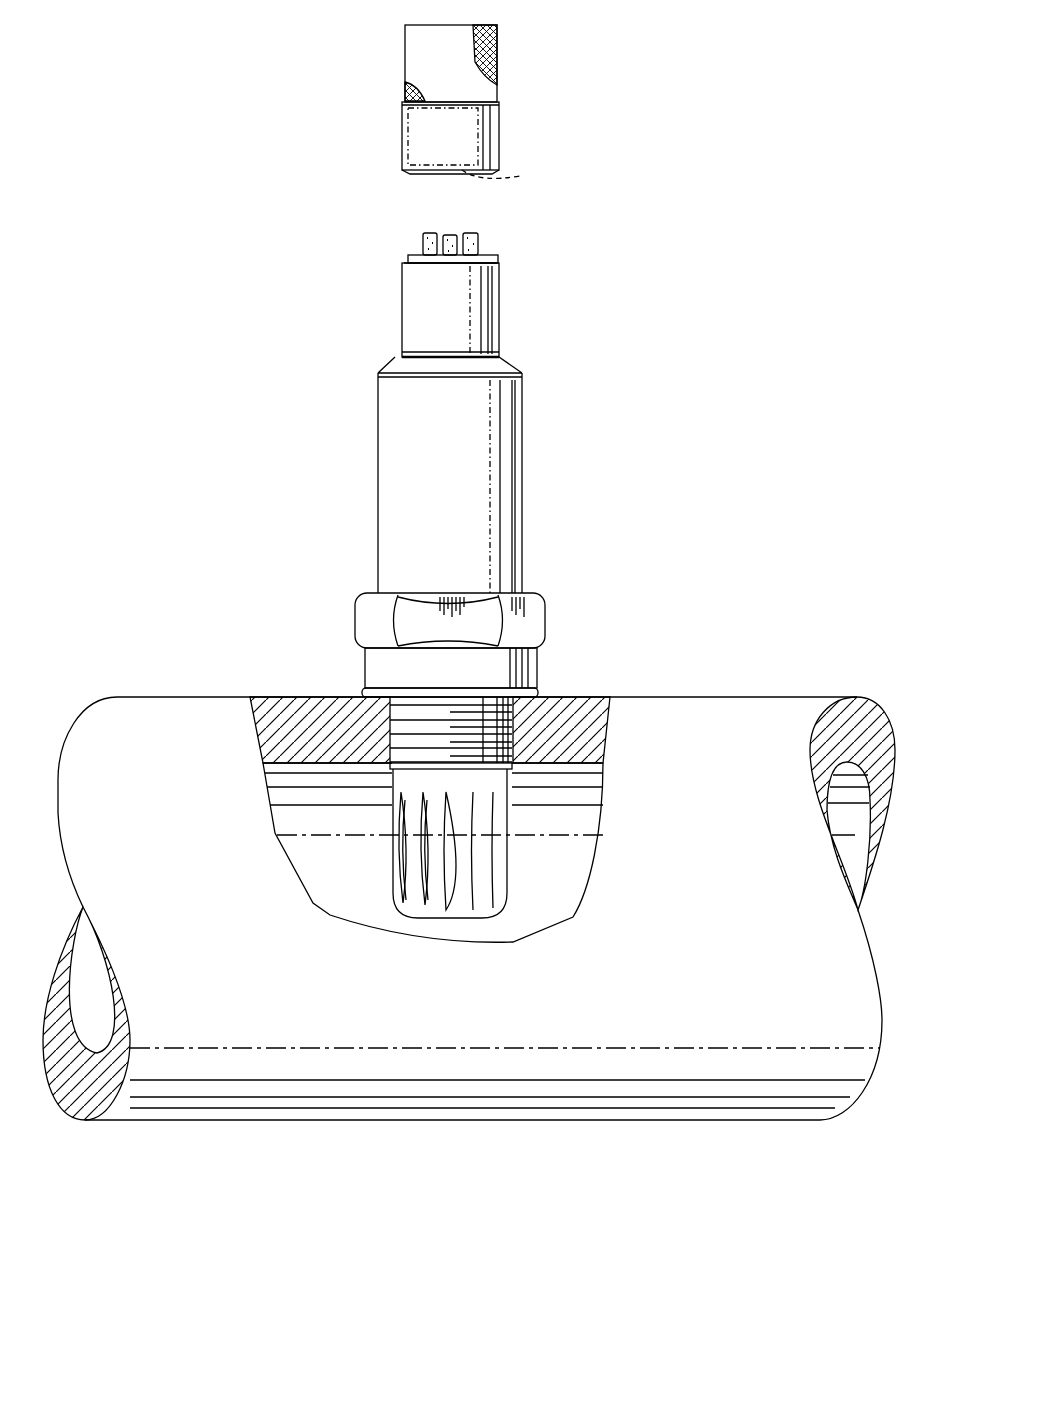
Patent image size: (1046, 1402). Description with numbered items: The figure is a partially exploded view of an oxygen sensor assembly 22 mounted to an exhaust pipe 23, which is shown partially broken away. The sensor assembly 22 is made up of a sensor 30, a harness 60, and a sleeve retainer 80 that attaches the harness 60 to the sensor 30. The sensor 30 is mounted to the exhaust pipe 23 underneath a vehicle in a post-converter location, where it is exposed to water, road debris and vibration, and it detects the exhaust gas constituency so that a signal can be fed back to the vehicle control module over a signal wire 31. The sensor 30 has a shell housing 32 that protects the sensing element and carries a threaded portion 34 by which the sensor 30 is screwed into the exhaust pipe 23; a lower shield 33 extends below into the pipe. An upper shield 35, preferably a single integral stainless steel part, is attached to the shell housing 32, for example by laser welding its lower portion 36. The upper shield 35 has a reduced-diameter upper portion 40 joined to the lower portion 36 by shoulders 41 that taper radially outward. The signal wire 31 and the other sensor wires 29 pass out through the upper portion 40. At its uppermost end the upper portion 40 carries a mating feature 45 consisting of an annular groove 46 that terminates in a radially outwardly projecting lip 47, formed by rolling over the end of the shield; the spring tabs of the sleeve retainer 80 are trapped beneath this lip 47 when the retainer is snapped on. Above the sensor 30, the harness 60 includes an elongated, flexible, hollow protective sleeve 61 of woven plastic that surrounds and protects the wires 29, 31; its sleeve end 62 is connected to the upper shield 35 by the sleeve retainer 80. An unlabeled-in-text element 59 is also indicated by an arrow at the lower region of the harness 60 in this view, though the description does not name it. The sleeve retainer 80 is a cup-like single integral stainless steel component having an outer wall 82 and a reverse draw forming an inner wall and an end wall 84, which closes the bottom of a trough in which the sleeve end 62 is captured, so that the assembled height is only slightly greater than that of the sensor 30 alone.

The oxygen sensor assembly 22 is at (215, 218).
The exhaust pipe 23 is at (177, 710).
The sensor wires 29 is at (424, 245).
The sensor 30 is at (525, 477).
The signal wire 31 is at (455, 233).
The shell housing 32 is at (502, 663).
The lower shield 33 is at (488, 858).
The threaded portion 34 is at (395, 723).
The upper shield 35 is at (522, 421).
The lower portion 36 is at (386, 500).
The upper portion 40 is at (488, 305).
The shoulders 41 is at (394, 360).
The mating feature 45 is at (501, 258).
The annular groove 46 is at (404, 266).
The outwardly projecting lip 47 is at (407, 258).
The cable assembly 59 is at (502, 77).
The harness 60 is at (403, 37).
The protective sleeve 61 is at (500, 24).
The sleeve end 62 is at (470, 172).
The sleeve retainer 80 is at (401, 130).
The outer wall 82 is at (487, 132).
The end wall 84 is at (409, 171).